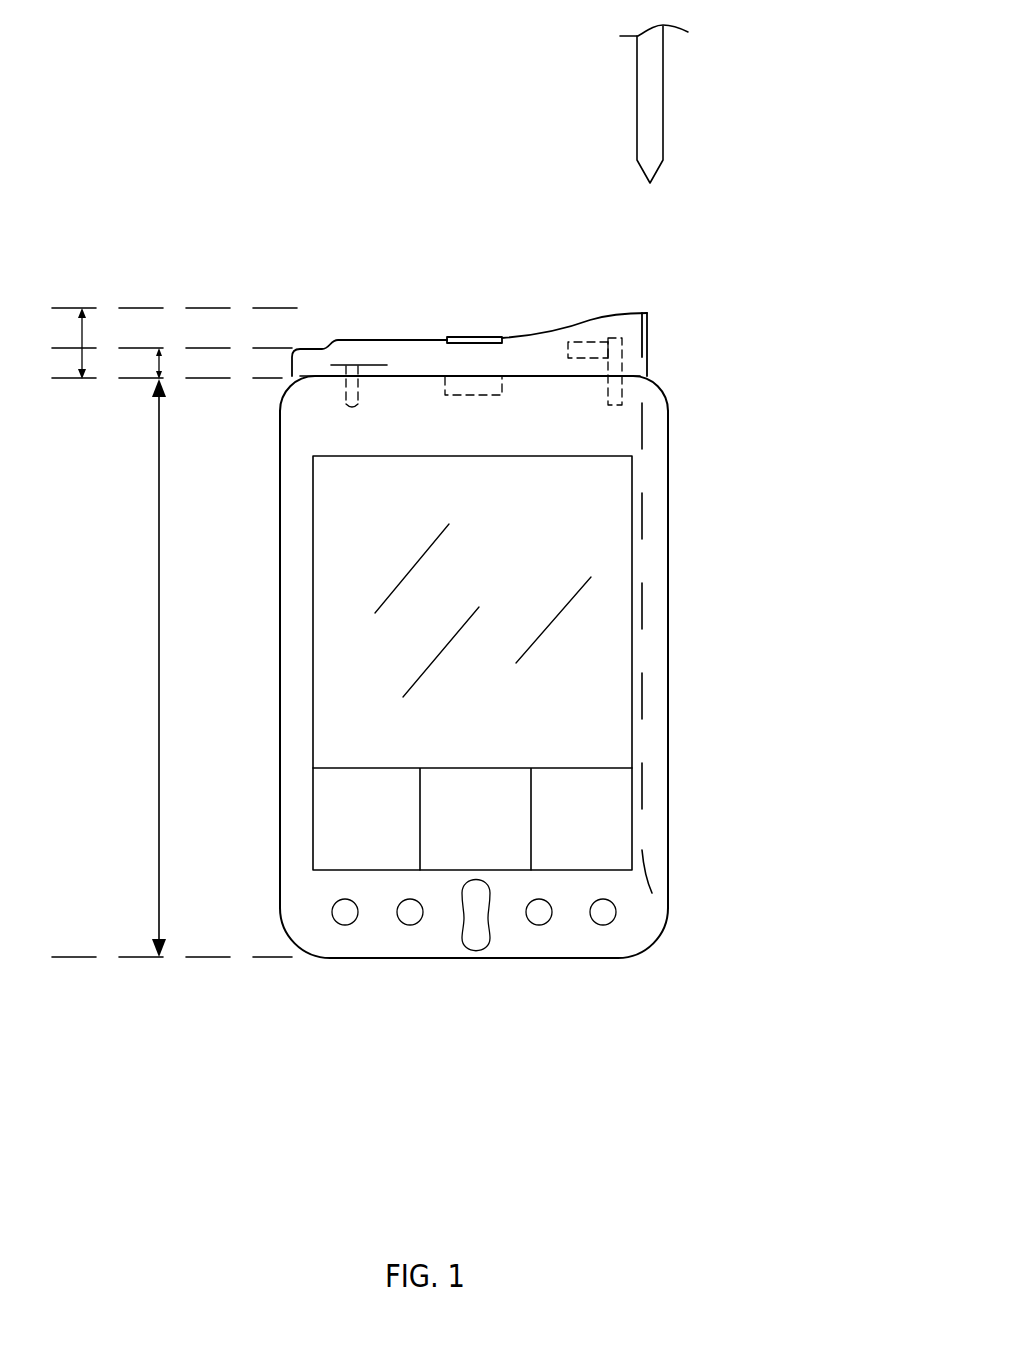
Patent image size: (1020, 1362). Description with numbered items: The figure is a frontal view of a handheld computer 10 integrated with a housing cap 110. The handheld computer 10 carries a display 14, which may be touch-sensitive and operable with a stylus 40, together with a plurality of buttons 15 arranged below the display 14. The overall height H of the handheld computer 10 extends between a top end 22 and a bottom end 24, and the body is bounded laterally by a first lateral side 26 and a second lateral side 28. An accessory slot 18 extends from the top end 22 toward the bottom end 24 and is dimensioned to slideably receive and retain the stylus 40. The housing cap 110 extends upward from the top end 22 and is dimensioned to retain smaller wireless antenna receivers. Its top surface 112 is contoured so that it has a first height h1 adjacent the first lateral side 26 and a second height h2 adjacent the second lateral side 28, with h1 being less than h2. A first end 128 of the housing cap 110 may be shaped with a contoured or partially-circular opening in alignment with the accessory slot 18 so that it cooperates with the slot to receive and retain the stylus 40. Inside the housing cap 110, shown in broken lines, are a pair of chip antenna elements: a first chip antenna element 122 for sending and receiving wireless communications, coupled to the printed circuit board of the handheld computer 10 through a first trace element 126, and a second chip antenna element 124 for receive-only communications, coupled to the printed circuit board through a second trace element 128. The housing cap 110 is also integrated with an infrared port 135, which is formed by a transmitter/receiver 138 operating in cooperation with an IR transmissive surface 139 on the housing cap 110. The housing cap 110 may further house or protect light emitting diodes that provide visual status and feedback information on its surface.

The handheld computer 10 is at (555, 697).
The display 14 is at (377, 753).
The buttons 15 is at (603, 924).
The accessory slot 18 is at (643, 440).
The top end 22 is at (651, 378).
The bottom end 24 is at (620, 958).
The first lateral side 26 is at (280, 590).
The second lateral side 28 is at (667, 602).
The stylus 40 is at (658, 87).
The housing cap 110 is at (502, 281).
The top surface 112 is at (565, 325).
The first chip antenna element 122 is at (358, 405).
The second chip antenna element 124 is at (608, 398).
The first trace element 126 is at (420, 375).
The first end of housing cap / second trace element 128 is at (598, 340).
The infrared port 135 is at (479, 333).
The transmitter/receiver 138 is at (464, 390).
The IR transmissive surface 139 is at (452, 338).
The height H is at (158, 668).
The first height h1 is at (171, 366).
The second height h2 is at (89, 343).